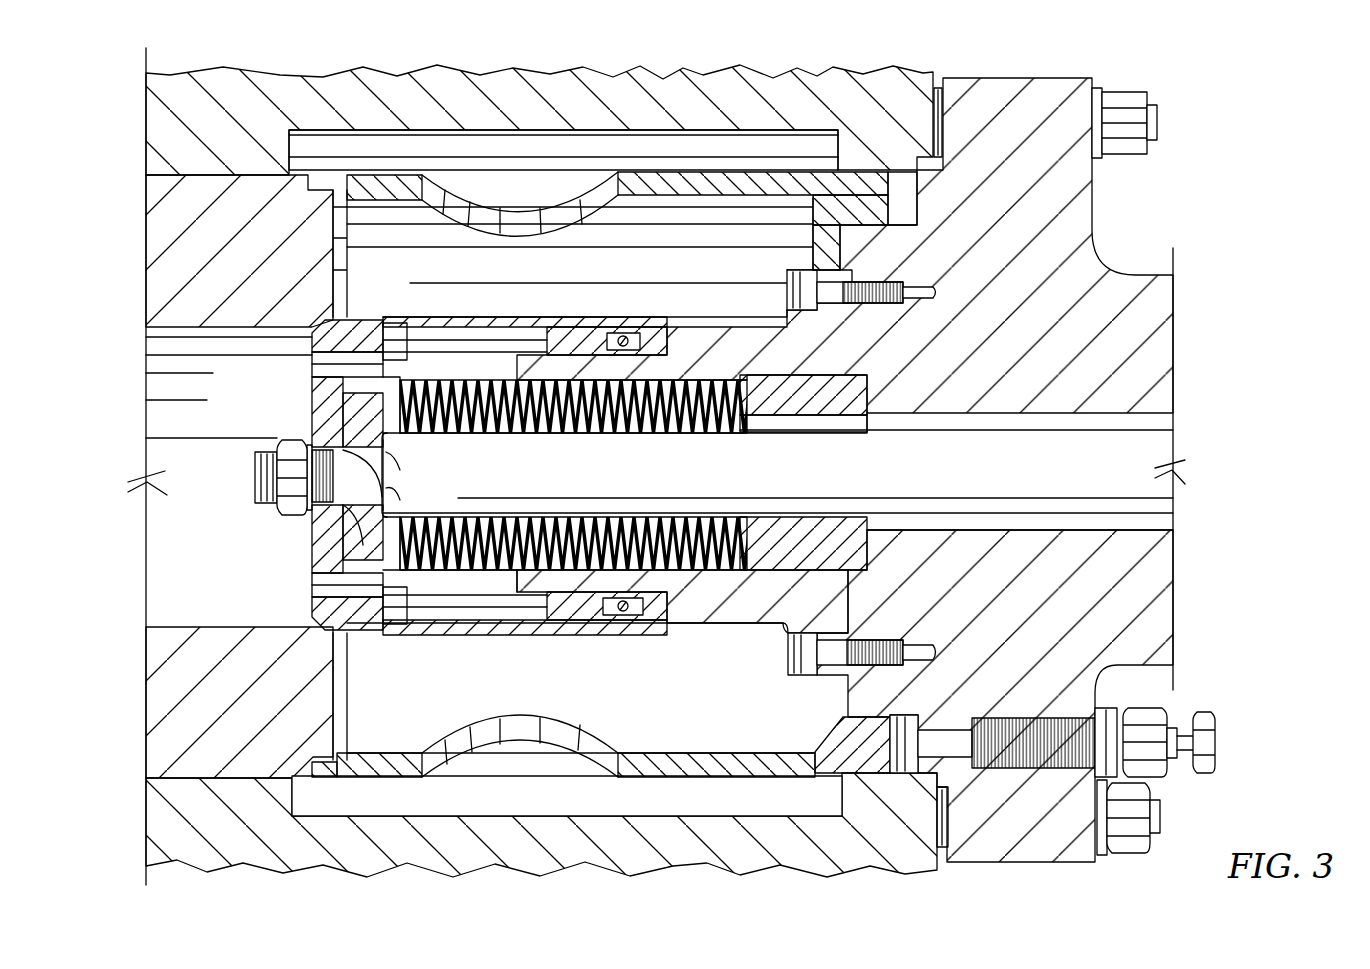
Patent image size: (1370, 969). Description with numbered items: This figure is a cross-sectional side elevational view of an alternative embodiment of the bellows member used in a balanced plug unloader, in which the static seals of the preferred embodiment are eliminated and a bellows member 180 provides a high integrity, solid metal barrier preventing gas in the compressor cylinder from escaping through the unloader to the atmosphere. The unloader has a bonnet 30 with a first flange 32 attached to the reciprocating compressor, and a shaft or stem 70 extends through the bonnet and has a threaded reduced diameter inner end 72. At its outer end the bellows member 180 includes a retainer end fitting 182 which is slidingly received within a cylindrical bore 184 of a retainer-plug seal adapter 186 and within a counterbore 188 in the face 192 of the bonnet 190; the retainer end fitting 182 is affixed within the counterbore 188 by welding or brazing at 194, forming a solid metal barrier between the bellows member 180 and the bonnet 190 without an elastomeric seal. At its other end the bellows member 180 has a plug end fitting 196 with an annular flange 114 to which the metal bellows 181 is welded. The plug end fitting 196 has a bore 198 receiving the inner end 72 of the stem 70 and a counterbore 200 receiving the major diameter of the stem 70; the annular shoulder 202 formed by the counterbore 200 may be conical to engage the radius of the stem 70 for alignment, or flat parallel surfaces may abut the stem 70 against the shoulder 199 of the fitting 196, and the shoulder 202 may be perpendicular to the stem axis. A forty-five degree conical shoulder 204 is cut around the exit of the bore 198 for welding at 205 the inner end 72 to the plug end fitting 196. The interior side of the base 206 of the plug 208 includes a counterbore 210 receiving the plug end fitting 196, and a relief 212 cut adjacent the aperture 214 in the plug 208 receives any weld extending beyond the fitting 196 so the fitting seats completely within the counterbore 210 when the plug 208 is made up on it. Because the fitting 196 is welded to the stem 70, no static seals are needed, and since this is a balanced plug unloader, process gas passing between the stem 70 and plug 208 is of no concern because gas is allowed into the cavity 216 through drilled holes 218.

The bonnet 30 is at (1130, 275).
The first flange 32 is at (1055, 78).
The stem 70 is at (1013, 445).
The reduced diameter inner end 72 is at (263, 482).
The annular flange 114 is at (392, 570).
The bellows member 180 is at (490, 573).
The metal bellows 181 is at (442, 570).
The retainer end fitting 182 is at (747, 600).
The cylindrical bore 184 is at (718, 602).
The retainer-plug seal adapter 186 is at (688, 608).
The counterbore 188 is at (860, 577).
The bonnet 190 is at (853, 700).
The face 192 is at (847, 610).
The weld 194 is at (857, 572).
The plug end fitting 196 is at (348, 563).
The bore 198 is at (398, 500).
The shoulder 199 is at (398, 466).
The counterbore 200 is at (397, 440).
The annular shoulder 202 is at (330, 412).
The conical shoulder 204 is at (356, 550).
The weld 205 is at (397, 481).
The base 206 is at (323, 426).
The plug 208 is at (364, 322).
The counterbore 210 is at (343, 402).
The relief 212 is at (343, 530).
The aperture 214 is at (312, 520).
The cavity 216 is at (563, 698).
The drilled holes 218 is at (323, 596).